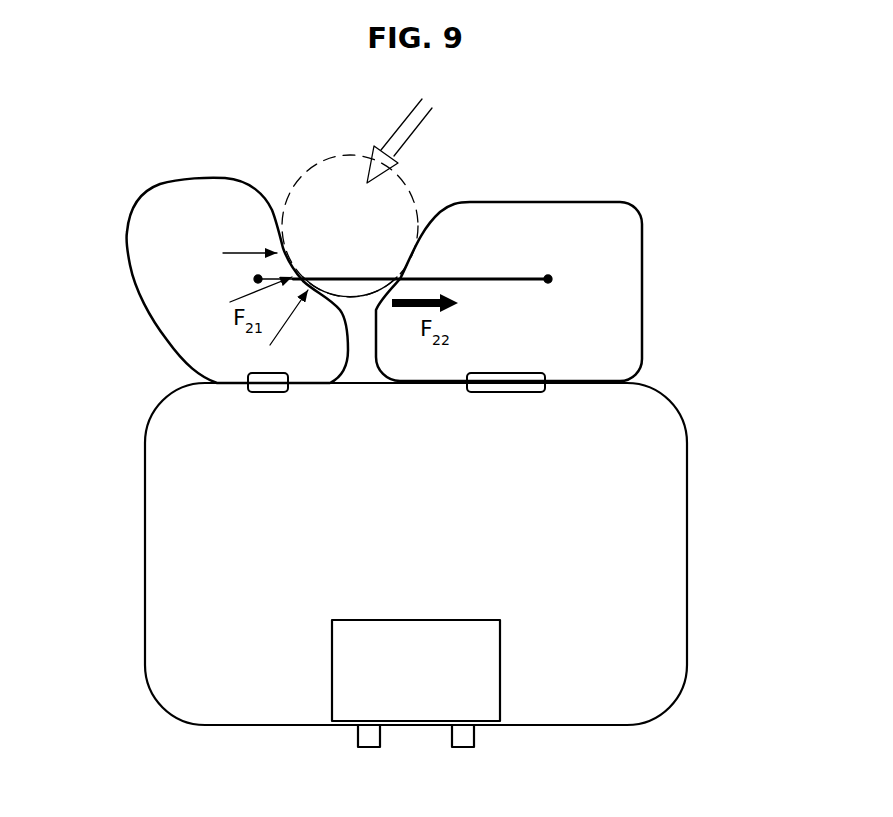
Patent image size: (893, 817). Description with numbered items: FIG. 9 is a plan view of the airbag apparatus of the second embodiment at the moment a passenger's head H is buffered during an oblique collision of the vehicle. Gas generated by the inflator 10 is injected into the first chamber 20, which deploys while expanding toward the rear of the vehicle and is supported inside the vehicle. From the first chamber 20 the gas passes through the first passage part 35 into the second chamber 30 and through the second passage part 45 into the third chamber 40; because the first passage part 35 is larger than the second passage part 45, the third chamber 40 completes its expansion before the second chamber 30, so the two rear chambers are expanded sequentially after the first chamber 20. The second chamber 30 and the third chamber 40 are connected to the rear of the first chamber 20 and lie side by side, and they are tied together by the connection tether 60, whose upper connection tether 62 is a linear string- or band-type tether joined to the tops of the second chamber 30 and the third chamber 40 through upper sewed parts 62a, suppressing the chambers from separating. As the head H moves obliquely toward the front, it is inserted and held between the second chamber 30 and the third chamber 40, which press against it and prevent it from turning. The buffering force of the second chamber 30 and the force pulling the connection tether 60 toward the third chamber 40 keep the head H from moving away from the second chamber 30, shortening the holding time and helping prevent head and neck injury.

The inflator 10 is at (472, 690).
The first chamber 20 is at (690, 488).
The second chamber 30 is at (126, 234).
The first passage part 35 is at (248, 384).
The third chamber 40 is at (643, 279).
The second passage part 45 is at (548, 396).
The connection tether 60 is at (428, 277).
The upper connection tether 62 is at (367, 279).
The upper sewed parts 62a is at (254, 279).
The head H is at (310, 168).